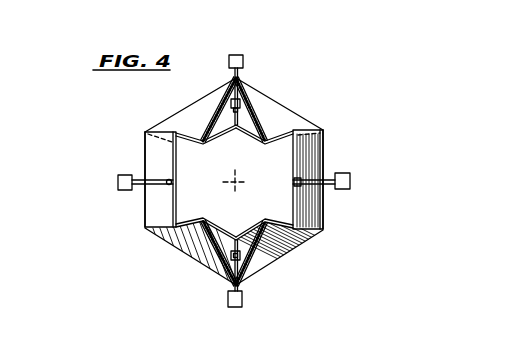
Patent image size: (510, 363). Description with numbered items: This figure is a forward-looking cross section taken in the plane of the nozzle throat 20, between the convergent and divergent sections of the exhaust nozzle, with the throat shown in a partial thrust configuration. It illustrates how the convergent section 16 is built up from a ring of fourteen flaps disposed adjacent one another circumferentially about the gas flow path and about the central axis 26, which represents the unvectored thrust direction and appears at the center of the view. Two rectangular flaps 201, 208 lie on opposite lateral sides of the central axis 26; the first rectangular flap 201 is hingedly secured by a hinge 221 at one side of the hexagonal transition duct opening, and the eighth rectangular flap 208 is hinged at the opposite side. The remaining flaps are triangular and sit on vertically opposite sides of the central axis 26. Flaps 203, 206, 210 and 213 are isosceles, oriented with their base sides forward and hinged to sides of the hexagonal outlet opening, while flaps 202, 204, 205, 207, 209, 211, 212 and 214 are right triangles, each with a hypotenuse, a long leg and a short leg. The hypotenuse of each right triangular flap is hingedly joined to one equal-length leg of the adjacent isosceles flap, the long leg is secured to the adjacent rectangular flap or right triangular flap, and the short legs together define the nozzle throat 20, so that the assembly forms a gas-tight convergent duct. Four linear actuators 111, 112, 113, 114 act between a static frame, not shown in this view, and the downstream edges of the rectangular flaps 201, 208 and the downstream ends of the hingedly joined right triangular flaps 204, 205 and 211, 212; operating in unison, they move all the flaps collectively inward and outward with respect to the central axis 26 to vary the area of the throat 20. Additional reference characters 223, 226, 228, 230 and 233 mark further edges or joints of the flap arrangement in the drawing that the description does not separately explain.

The convergent section 16 is at (297, 94).
The nozzle throat 20 is at (175, 164).
The central axis 26 is at (240, 180).
The linear actuator 111 is at (349, 174).
The linear actuator 112 is at (243, 60).
The linear actuator 113 is at (137, 171).
The linear actuator 114 is at (242, 302).
The rectangular flap 201 is at (312, 179).
The right triangular flap 202 is at (278, 138).
The isosceles triangular flap 203 is at (291, 124).
The right triangular flap 204 is at (249, 105).
The right triangular flap 205 is at (230, 103).
The isosceles triangular flap 206 is at (208, 124).
The right triangular flap 207 is at (190, 140).
The rectangular flap 208 is at (174, 212).
The right triangular flap 209 is at (187, 224).
The isosceles triangular flap 210 is at (190, 256).
The right triangular flap 211 is at (227, 272).
The right triangular flap 212 is at (248, 258).
The isosceles triangular flap 213 is at (280, 253).
The right triangular flap 214 is at (283, 225).
The hinge 221 is at (325, 210).
The upper right edge 223 is at (305, 119).
The upper left edge 226 is at (178, 113).
The left panel edge 228 is at (145, 150).
The lower left hatched face 230 is at (165, 240).
The lower right hatched face 233 is at (312, 237).